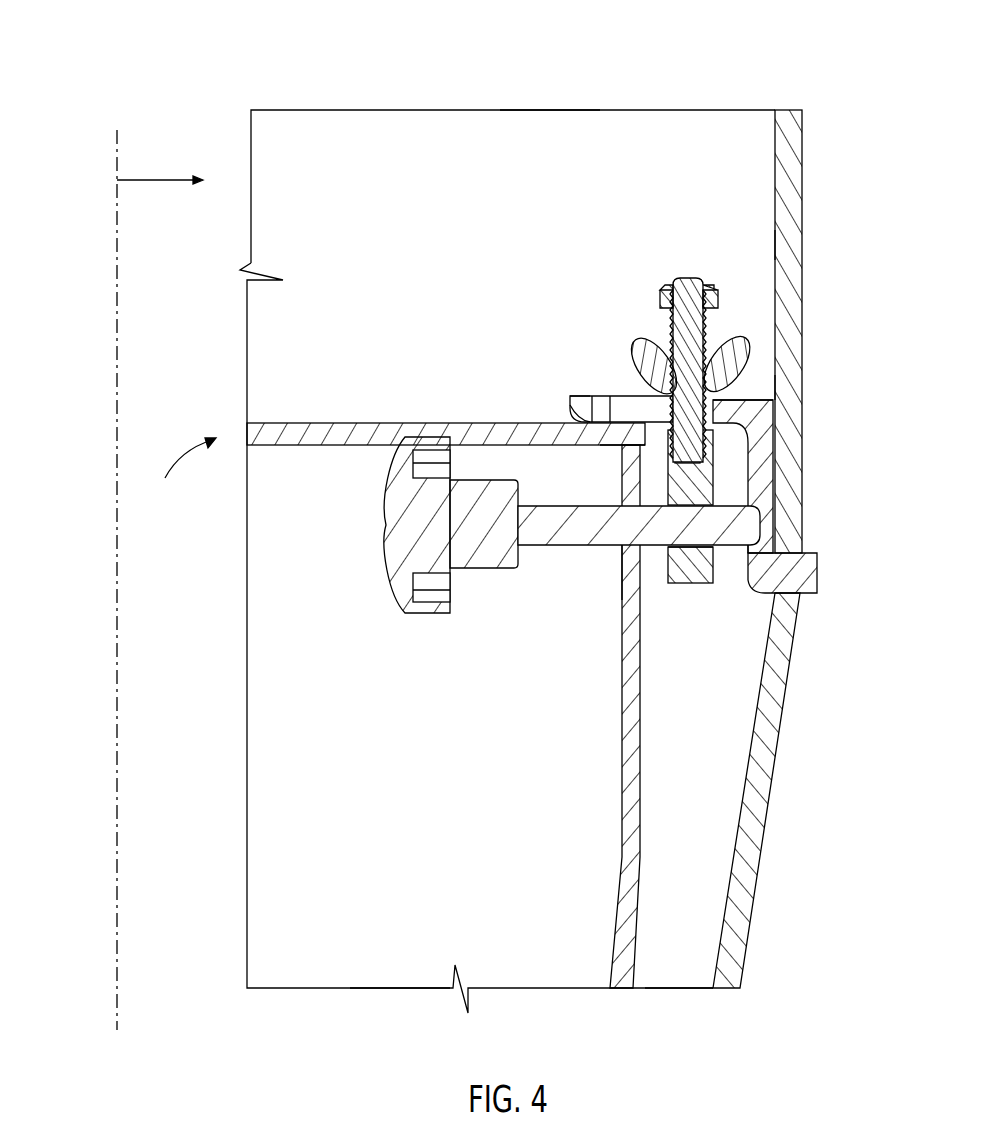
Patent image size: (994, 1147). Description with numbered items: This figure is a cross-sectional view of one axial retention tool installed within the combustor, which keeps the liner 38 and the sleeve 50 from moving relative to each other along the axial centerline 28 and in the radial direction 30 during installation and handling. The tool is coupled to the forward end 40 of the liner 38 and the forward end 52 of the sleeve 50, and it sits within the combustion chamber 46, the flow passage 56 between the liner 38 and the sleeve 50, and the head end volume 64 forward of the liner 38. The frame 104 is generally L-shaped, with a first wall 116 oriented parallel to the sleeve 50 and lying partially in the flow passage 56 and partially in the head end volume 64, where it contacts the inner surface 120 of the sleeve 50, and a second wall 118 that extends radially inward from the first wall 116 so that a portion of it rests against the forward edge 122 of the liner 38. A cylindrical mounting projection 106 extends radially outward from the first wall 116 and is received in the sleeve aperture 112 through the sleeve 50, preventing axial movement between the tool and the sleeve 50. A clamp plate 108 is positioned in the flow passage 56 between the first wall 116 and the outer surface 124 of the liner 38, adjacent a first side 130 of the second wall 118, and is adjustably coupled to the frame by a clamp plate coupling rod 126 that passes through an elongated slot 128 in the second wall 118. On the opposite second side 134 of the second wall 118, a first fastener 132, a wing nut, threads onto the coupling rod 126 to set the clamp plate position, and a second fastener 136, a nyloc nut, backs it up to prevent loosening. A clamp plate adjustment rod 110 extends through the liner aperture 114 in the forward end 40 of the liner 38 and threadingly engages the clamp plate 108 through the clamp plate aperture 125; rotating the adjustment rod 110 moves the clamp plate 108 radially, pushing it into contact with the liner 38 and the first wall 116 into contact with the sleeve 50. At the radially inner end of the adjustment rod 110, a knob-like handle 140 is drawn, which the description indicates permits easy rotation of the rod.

The axial centerline 28 is at (113, 218).
The radial direction 30 is at (155, 180).
The liner 38 is at (281, 684).
The forward end of the liner 40 is at (183, 472).
The combustion chamber 46 is at (442, 851).
The sleeve 50 is at (776, 803).
The forward end of the sleeve 52 is at (798, 66).
The flow passage 56 is at (699, 801).
The head end volume 64 is at (582, 226).
The frame 104 is at (782, 412).
The mounting projection 106 is at (808, 570).
The clamp plate 108 is at (690, 585).
The clamp plate adjustment rod 110 is at (580, 540).
The sleeve aperture 112 is at (768, 545).
The liner aperture 114 is at (624, 548).
The first wall 116 is at (780, 478).
The second wall 118 is at (578, 394).
The inner surface of the sleeve 120 is at (776, 243).
The forward edge of the liner 122 is at (318, 423).
The outer surface of the liner 124 is at (638, 818).
The clamp plate aperture 125 is at (705, 565).
The clamp plate coupling rod 126 is at (690, 277).
The elongated slot 128 is at (630, 398).
The first side of the second wall 130 is at (620, 427).
The first fastener 132 is at (748, 348).
The second side of the second wall 134 is at (776, 386).
The second fastener 136 is at (720, 298).
The knob 140 is at (393, 577).